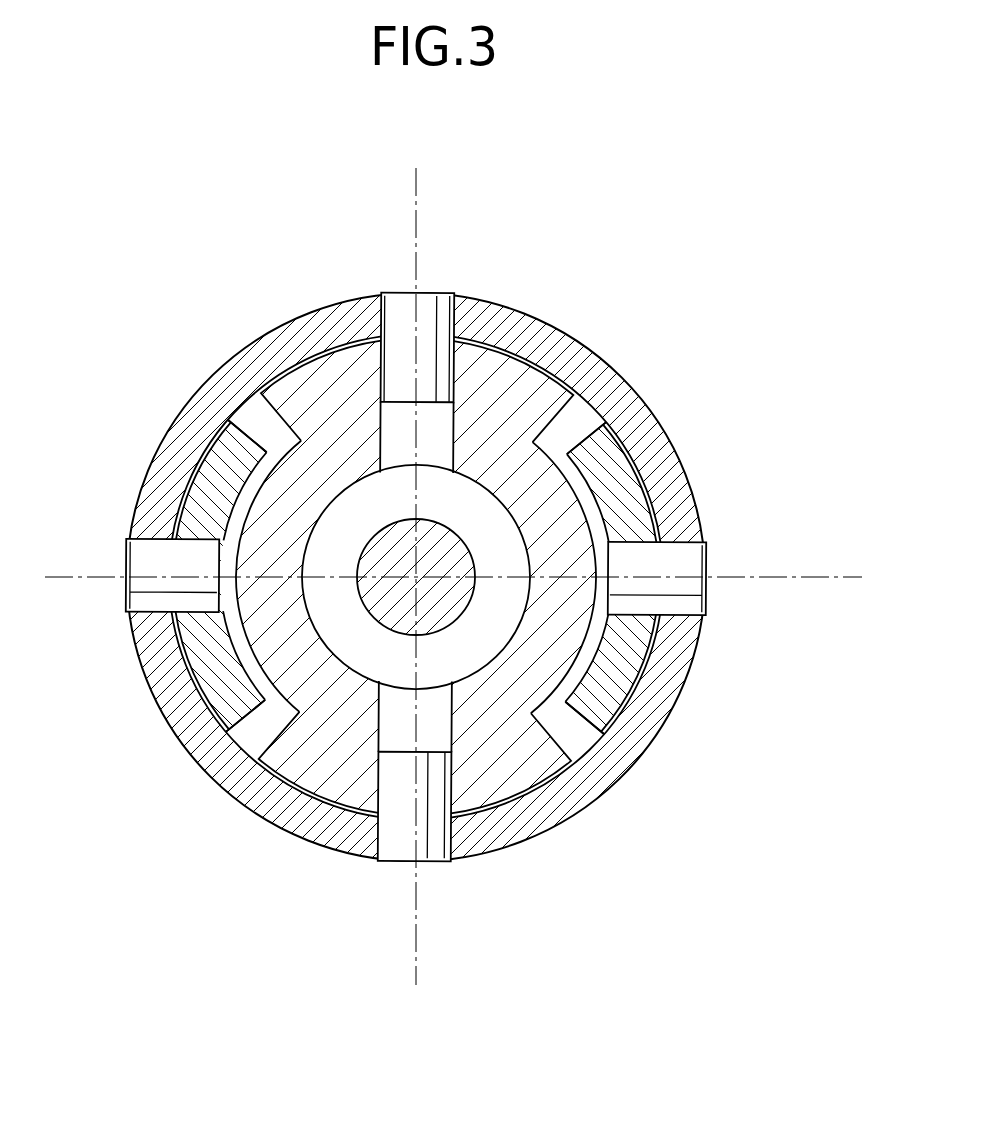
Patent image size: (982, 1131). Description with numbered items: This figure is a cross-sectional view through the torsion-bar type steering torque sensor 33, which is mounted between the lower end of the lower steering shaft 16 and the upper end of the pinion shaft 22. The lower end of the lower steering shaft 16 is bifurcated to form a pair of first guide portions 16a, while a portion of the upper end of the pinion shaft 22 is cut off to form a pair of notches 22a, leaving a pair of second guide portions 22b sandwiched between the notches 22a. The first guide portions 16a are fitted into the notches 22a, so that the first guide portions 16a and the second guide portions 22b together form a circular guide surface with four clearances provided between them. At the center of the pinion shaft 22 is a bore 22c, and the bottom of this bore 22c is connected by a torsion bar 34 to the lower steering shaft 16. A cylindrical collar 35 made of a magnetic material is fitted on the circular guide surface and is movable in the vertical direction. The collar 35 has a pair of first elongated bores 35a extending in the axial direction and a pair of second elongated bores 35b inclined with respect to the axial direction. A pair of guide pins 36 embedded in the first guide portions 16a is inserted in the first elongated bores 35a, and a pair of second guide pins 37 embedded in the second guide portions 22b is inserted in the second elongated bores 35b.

The lower steering shaft 16 is at (648, 485).
The first guide portions 16a is at (200, 467).
The pinion shaft 22 is at (503, 350).
The notches 22a is at (557, 510).
The second guide portions 22b is at (340, 340).
The bore 22c is at (371, 678).
The steering torque sensor 33 is at (688, 291).
The torsion bar 34 is at (447, 602).
The collar 35 is at (247, 345).
The first elongated bores 35a is at (150, 556).
The second elongated bores 35b is at (447, 306).
The guide pins 36 is at (147, 592).
The second guide pins 37 is at (403, 305).